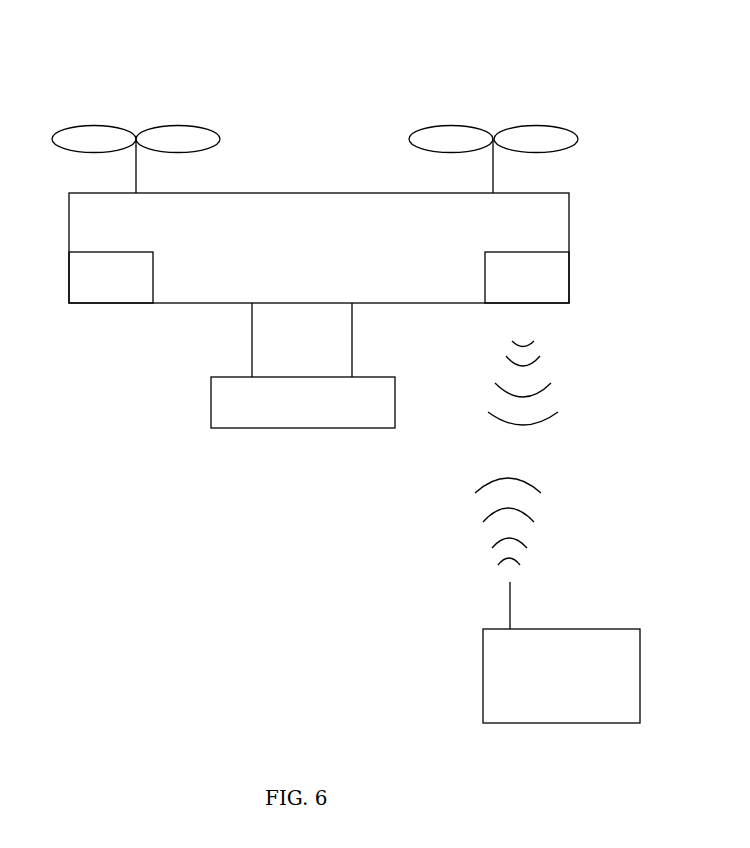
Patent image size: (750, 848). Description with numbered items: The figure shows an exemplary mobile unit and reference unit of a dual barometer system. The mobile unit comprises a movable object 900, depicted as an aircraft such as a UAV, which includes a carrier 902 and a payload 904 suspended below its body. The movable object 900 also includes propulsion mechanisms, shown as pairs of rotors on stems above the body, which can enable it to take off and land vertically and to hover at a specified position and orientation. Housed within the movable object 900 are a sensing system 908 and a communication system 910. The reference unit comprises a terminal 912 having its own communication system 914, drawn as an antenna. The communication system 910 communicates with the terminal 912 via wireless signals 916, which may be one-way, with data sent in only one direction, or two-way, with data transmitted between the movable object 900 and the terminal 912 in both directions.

The movable object 900 is at (380, 226).
The carrier 902 is at (221, 332).
The payload 904 is at (285, 412).
The sensing system 908 is at (92, 287).
The communication system 910 is at (510, 283).
The terminal 912 is at (539, 690).
The communication system 914 is at (505, 602).
The wireless signals 916 is at (581, 388).